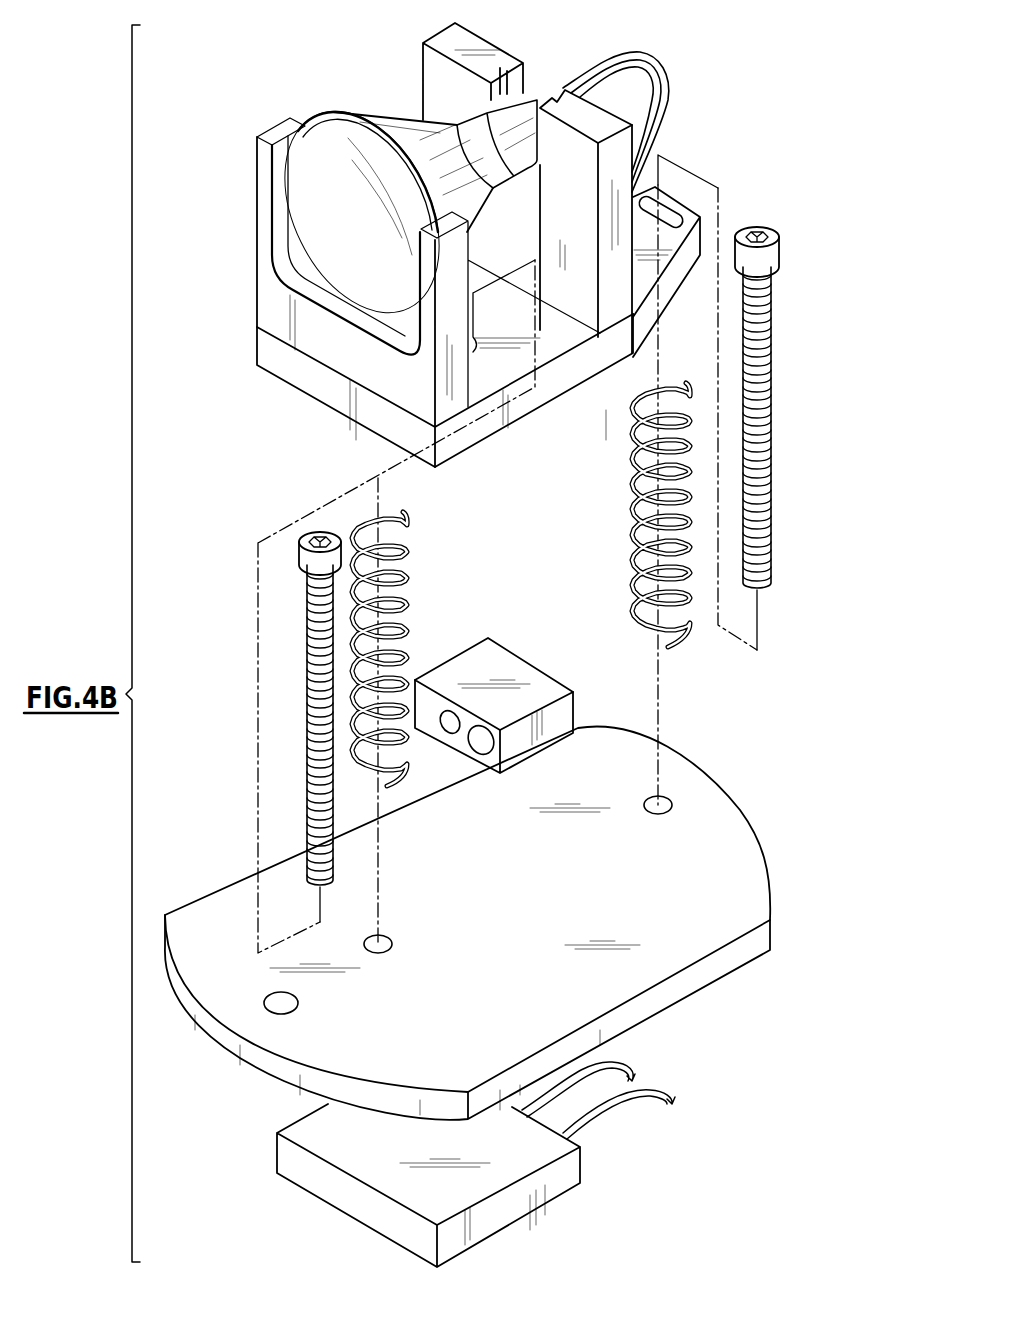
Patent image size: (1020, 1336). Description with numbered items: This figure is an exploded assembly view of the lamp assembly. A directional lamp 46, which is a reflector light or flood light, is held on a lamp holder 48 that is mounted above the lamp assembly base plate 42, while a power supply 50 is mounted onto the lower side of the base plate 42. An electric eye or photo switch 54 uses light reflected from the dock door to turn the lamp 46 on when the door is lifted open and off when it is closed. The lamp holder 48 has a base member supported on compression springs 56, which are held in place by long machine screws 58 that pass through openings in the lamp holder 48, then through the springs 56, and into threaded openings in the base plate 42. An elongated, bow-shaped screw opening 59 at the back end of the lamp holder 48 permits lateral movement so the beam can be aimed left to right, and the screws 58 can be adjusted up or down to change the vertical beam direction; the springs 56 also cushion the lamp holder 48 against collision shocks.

The lamp assembly base plate 42 is at (732, 877).
The directional lamp 46 is at (363, 113).
The lamp holder 48 is at (287, 383).
The power supply 50 is at (505, 1210).
The electric eye or photo switch 54 is at (513, 655).
The compression springs 56 is at (403, 563).
The long machine screws 58 is at (308, 592).
The elongated bow-shaped screw opening 59 is at (668, 218).